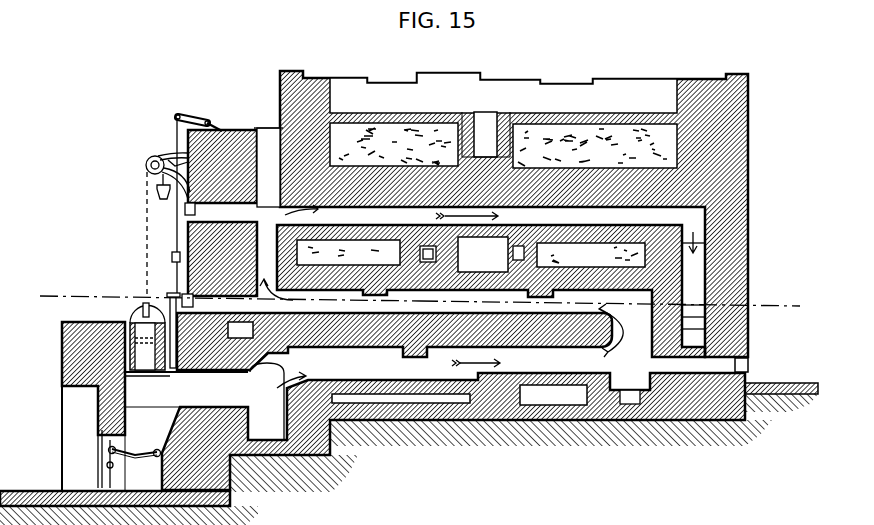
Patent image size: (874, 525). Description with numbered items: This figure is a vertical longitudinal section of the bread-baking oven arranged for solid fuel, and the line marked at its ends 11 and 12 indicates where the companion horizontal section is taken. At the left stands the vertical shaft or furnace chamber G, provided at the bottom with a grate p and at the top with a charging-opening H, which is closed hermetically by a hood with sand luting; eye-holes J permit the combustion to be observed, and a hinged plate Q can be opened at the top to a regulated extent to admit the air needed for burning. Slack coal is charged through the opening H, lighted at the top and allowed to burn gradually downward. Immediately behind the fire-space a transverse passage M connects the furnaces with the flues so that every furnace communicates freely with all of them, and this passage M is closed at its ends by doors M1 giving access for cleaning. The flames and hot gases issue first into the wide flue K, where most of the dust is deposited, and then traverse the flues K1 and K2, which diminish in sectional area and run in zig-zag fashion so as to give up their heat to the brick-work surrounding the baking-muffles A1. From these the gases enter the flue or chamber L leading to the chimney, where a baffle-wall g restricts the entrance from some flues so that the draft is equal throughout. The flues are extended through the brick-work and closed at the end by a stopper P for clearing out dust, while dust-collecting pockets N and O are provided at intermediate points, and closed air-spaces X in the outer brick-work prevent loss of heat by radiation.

The flue K2 is at (391, 216).
The baking-muffle A1 is at (471, 254).
The flue L is at (693, 286).
The baffle-wall g is at (693, 307).
The flue K1 is at (329, 294).
The eye-hole J is at (165, 329).
The plate Q is at (197, 303).
The dust-collecting pocket O is at (240, 324).
The charging-opening H is at (147, 336).
The furnace chamber G is at (152, 448).
The dust-collecting pocket N is at (387, 390).
The door M1 is at (278, 401).
The transverse passage M is at (267, 438).
The grate p is at (134, 464).
The flue K is at (305, 363).
The closed air-space X is at (459, 397).
The stopper P is at (705, 366).
The section line end 11 is at (230, 298).
The section line end 12 is at (612, 309).